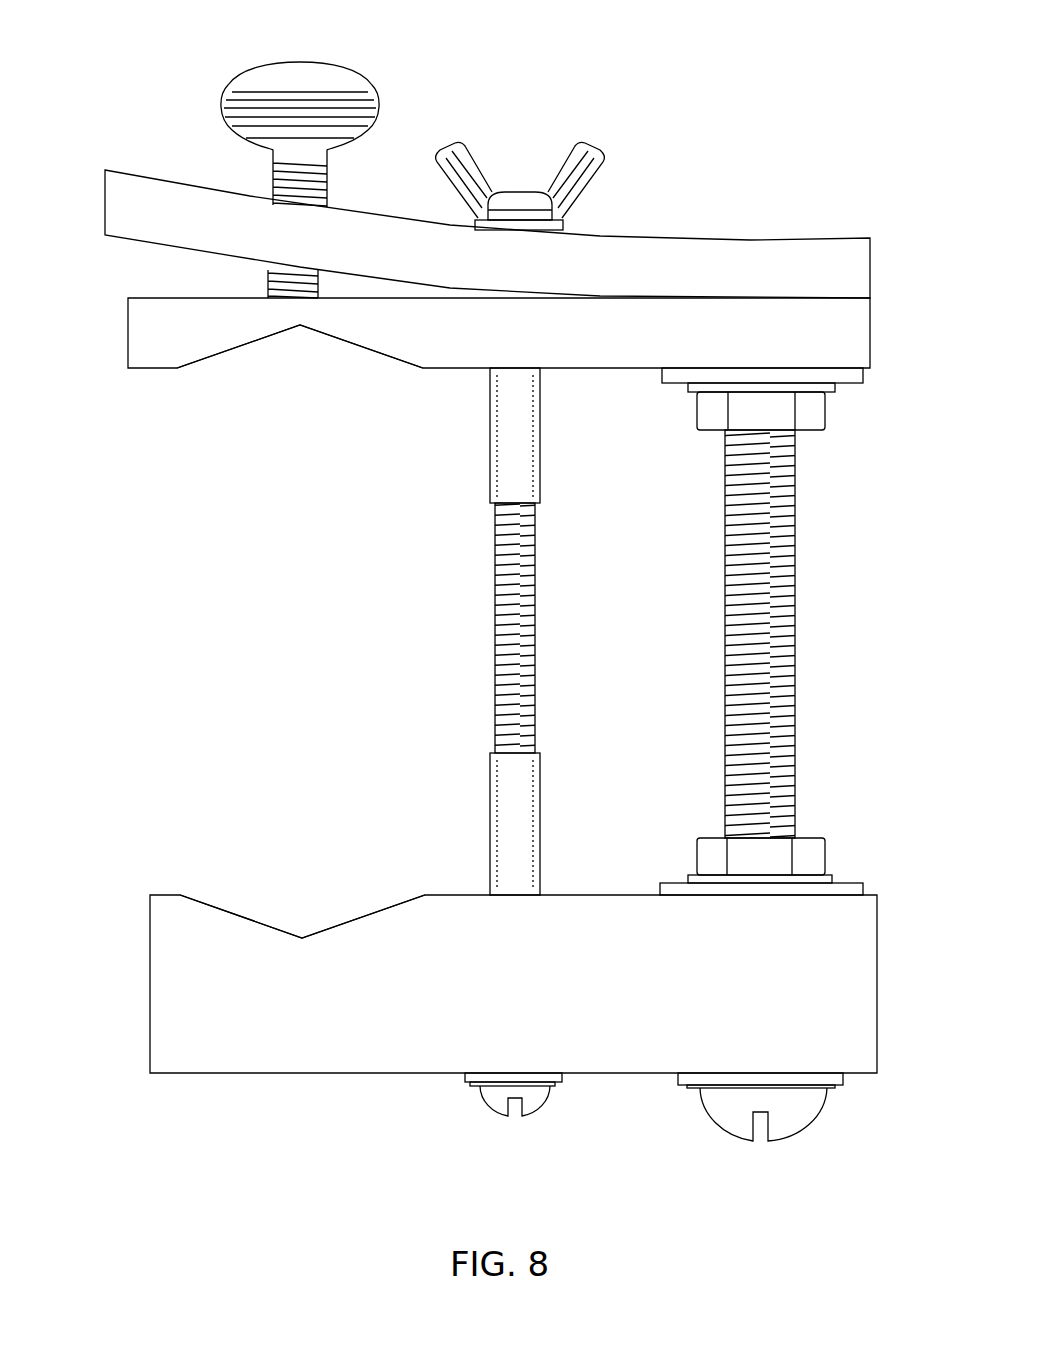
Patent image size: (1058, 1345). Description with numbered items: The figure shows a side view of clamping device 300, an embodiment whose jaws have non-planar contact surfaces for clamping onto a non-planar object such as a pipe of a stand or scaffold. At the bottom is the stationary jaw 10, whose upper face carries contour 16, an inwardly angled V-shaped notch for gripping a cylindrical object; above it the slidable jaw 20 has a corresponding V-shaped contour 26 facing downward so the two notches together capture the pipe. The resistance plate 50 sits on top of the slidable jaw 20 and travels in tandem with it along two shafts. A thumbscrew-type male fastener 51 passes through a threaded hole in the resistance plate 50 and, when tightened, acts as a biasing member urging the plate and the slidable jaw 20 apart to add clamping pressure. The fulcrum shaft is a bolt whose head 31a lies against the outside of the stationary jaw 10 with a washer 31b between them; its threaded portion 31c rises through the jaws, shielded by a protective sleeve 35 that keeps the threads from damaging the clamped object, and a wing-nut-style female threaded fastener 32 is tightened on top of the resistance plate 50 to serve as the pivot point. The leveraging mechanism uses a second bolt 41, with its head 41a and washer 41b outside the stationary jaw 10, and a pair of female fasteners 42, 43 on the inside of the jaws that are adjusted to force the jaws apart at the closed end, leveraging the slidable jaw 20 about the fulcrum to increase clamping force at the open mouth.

The clamping device 300 is at (762, 78).
The stationary jaw 10 is at (167, 990).
The contour 16 is at (232, 913).
The slidable jaw 20 is at (150, 345).
The contour 26 is at (215, 365).
The resistance plate 50 is at (148, 222).
The male fastener 51 is at (275, 86).
The female threaded fastener 32 is at (567, 153).
The threaded portion 31c is at (495, 625).
The protective sleeve 35 is at (495, 873).
The washer 31b is at (468, 1077).
The head 31a is at (487, 1103).
The bolt 41 is at (793, 580).
The female fastener 42 is at (780, 857).
The female fastener 43 is at (803, 413).
The washer 41b is at (845, 1077).
The head 41a is at (803, 1112).